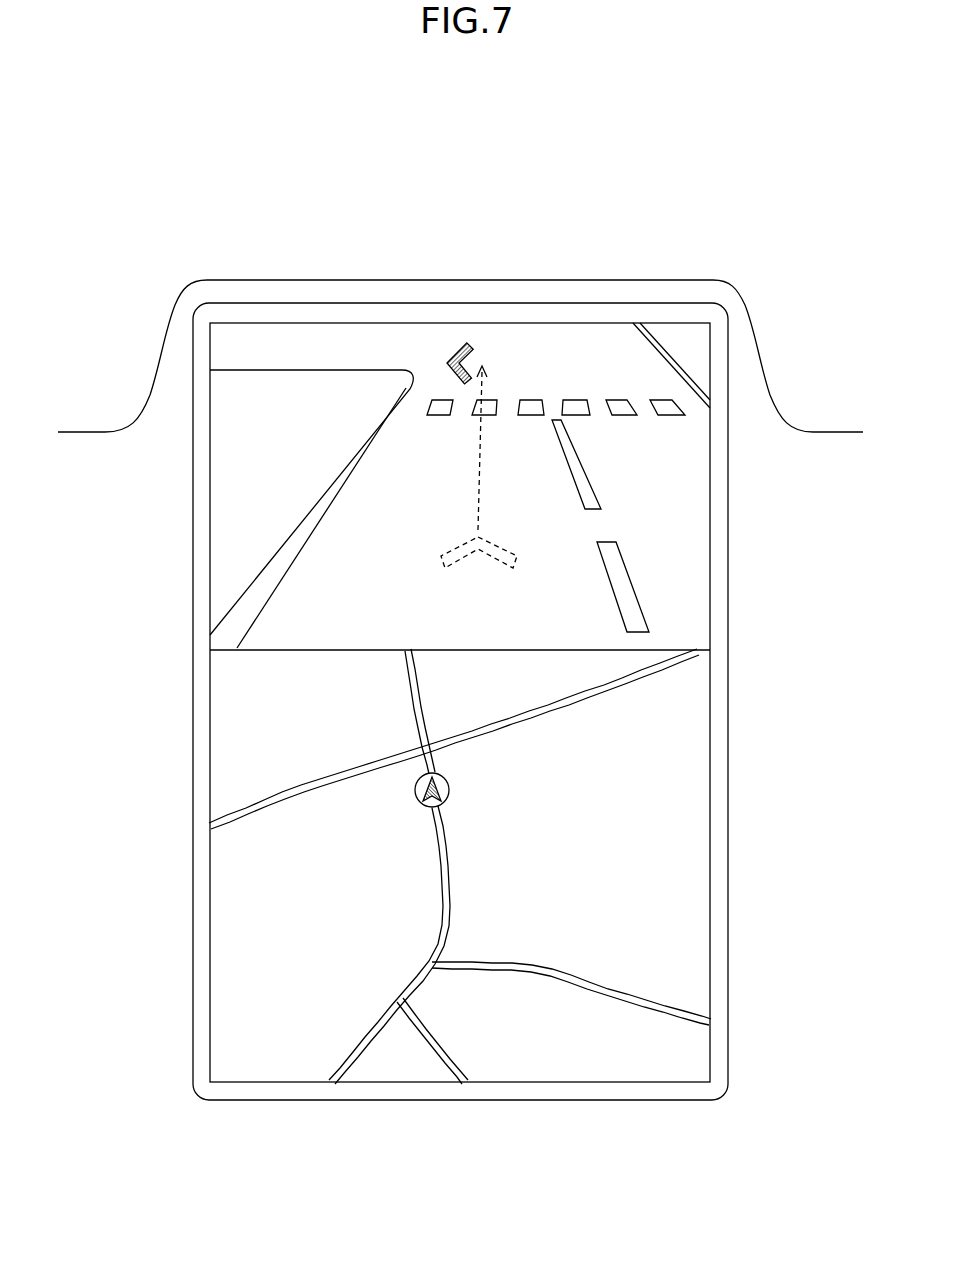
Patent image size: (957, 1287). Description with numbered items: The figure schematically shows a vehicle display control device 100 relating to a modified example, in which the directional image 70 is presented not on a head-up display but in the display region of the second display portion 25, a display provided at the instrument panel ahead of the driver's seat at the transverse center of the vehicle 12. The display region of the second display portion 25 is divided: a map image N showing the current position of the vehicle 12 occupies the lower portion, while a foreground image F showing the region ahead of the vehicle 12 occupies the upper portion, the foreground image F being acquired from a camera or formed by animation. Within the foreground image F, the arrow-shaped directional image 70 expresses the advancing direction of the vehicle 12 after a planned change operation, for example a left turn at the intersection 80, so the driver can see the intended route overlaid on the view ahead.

The vehicle 12 is at (347, 165).
The vehicle display control device 100 is at (299, 240).
The second display portion 25 is at (577, 297).
The directional image 70 is at (451, 339).
The intersection 80 is at (521, 343).
The foreground image F is at (665, 543).
The map image N is at (667, 803).